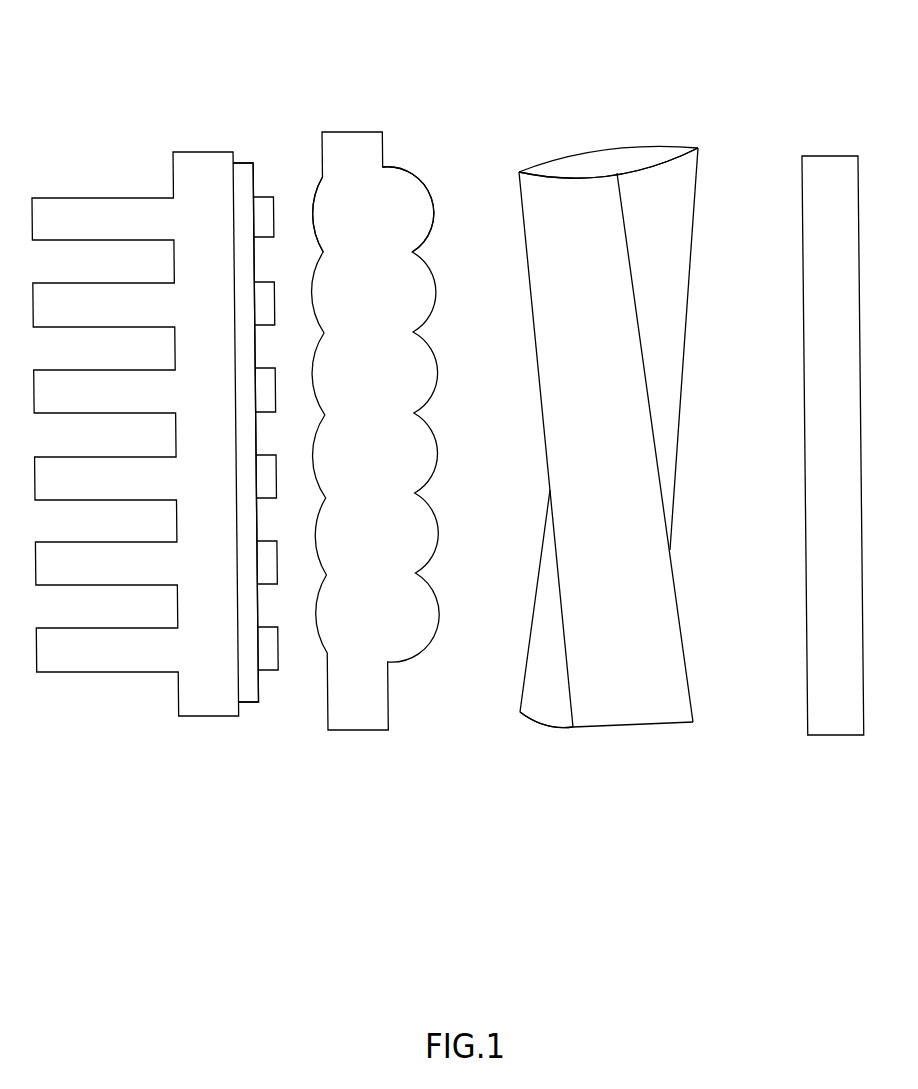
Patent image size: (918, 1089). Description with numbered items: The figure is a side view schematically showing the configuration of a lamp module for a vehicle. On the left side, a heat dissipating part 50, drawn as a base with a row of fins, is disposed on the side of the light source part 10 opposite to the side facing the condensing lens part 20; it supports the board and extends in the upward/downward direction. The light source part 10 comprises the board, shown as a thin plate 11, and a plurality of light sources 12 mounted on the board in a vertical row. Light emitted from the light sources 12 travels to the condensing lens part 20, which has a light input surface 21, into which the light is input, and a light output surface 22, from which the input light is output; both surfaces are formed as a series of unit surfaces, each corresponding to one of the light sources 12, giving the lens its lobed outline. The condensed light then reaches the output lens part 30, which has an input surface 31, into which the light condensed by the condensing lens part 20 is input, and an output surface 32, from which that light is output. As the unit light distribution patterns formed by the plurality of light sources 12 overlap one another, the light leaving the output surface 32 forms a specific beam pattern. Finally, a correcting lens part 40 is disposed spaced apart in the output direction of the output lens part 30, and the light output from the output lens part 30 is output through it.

The light source part 10 is at (223, 63).
The substrate 11 is at (242, 178).
The light sources 12 is at (268, 210).
The condensing lens part 20 is at (368, 130).
The light input surface 21 is at (313, 193).
The light output surface 22 is at (422, 180).
The output lens part 30 is at (617, 170).
The input surface 31 is at (553, 672).
The output surface 32 is at (673, 230).
The correcting lens part 40 is at (830, 187).
The heat dissipating part 50 is at (190, 183).